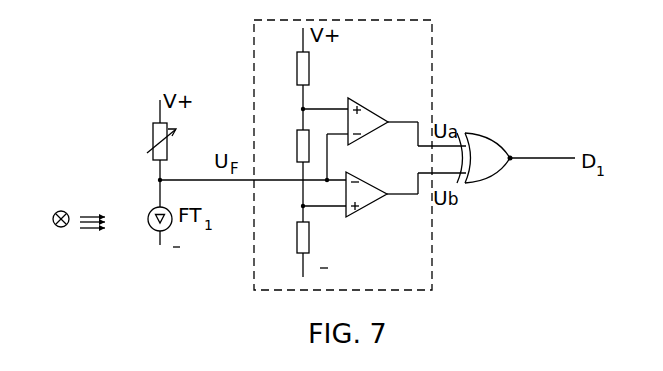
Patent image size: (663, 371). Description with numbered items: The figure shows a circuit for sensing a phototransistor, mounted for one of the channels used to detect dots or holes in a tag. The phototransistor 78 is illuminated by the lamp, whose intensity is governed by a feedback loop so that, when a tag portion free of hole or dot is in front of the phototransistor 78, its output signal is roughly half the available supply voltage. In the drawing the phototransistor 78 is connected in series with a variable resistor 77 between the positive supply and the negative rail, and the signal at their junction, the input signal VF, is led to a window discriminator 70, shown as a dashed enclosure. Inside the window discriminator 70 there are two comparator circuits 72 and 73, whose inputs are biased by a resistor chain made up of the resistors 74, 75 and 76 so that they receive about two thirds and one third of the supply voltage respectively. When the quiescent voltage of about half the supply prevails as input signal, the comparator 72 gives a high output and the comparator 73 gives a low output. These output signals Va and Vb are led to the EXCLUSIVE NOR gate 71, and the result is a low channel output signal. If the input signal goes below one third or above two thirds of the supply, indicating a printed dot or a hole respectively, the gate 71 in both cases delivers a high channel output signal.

The window discriminator 70 is at (427, 21).
The EXCLUSIVE NOR gate 71 is at (500, 150).
The comparator circuit 72 is at (366, 104).
The comparator circuit 73 is at (356, 179).
The resistor 74 is at (297, 63).
The resistor 75 is at (297, 134).
The resistor 76 is at (297, 236).
The variable resistor 77 is at (153, 131).
The phototransistor 78 is at (149, 210).